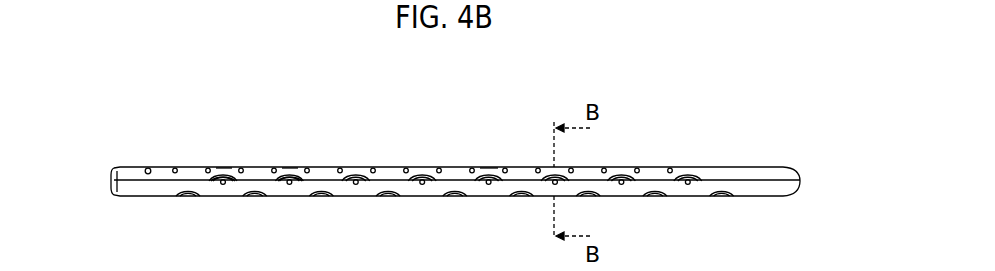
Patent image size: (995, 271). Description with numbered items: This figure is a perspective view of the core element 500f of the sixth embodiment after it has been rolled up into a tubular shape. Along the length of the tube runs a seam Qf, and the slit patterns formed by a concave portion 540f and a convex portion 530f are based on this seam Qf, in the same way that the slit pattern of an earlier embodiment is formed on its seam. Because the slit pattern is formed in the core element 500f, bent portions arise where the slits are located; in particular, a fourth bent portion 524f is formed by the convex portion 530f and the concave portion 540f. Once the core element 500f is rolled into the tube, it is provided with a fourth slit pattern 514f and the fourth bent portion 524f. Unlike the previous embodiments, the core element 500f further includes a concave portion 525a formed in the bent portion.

The core element 500f is at (389, 125).
The seam Qf is at (148, 168).
The fourth slit pattern 514f is at (225, 167).
The concave portion 540f is at (290, 167).
The concave portion 525a is at (489, 167).
The fourth bent portion 524f is at (218, 183).
The convex portion 530f is at (293, 183).